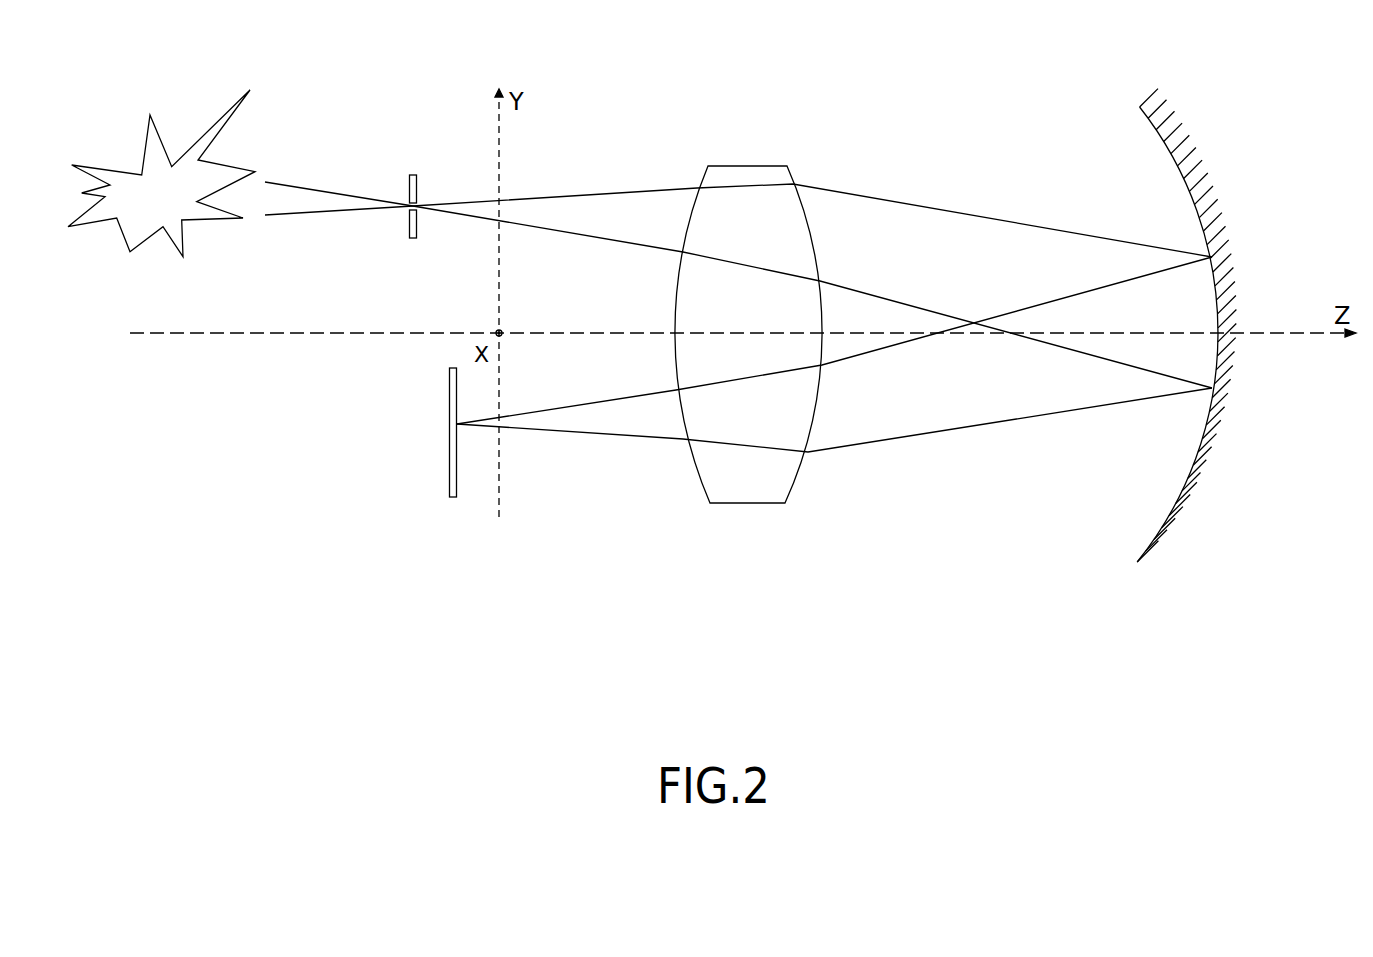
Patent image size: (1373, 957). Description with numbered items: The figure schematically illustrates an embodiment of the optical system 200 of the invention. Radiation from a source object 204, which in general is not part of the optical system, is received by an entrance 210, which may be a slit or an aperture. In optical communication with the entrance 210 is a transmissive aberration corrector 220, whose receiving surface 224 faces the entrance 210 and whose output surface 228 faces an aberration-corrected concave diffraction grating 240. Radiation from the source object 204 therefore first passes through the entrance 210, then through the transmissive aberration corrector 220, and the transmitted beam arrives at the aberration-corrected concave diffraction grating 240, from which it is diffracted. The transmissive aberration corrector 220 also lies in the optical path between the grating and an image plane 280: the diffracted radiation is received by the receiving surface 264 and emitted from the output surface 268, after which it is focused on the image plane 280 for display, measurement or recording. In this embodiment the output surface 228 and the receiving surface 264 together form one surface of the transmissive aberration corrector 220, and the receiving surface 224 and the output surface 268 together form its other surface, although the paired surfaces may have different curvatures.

The optical system 200 is at (959, 127).
The source object 204 is at (143, 132).
The entrance 210 is at (407, 198).
The transmissive aberration corrector 220 is at (737, 177).
The receiving surface 224 is at (697, 185).
The output surface 228 is at (797, 182).
The aberration-corrected concave diffraction grating 240 is at (1230, 427).
The receiving surface 264 is at (800, 478).
The output surface 268 is at (698, 477).
The image plane 280 is at (448, 457).